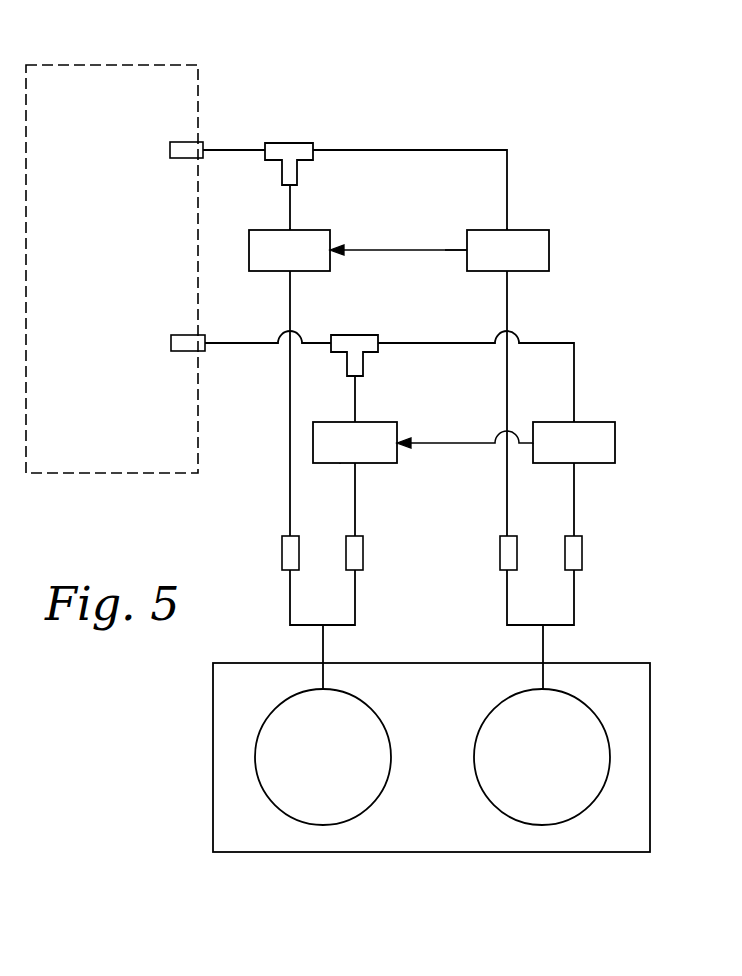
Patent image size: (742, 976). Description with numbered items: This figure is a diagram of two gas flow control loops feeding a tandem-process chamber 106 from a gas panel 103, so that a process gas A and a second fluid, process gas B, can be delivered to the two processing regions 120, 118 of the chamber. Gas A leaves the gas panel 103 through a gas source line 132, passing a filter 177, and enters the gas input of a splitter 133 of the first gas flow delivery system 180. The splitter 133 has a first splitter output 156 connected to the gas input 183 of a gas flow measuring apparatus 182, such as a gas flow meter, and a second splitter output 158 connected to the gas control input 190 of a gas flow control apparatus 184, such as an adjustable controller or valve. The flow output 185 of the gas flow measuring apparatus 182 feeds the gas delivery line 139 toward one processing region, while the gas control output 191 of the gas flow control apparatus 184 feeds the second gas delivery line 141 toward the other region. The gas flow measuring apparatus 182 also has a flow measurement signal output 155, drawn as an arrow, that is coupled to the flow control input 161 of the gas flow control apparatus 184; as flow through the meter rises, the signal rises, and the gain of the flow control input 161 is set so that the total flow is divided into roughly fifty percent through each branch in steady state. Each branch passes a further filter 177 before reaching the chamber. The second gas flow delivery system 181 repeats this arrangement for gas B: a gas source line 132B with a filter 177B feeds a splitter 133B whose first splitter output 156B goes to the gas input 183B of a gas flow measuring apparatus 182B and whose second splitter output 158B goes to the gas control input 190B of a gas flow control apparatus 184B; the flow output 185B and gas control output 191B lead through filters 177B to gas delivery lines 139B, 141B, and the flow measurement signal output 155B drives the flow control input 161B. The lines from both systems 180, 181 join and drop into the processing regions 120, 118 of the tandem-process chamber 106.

The gas panel 103 is at (104, 65).
The filter 177 is at (184, 142).
The valve 177B is at (176, 352).
The gas source line 132 is at (233, 143).
The splitter 133 is at (299, 142).
The second splitter output 158 is at (281, 178).
The first splitter output 156 is at (314, 153).
The gas control input 190 is at (289, 229).
The gas flow control apparatus 184 is at (306, 229).
The flow control input 161 is at (340, 247).
The flow measurement signal output 155 is at (449, 249).
The gas flow measuring apparatus 182 is at (550, 250).
The gas input 183 is at (509, 229).
The gas control output 191 is at (289, 273).
The flow output 185 is at (506, 273).
The gas flow delivery system 180 is at (516, 124).
The gas B supply line 132B is at (246, 346).
The T fitting 133B is at (366, 334).
The line to gas flow meter 156B is at (379, 344).
The T fitting stem line 158B is at (364, 364).
The gas flow controller input 190B is at (357, 421).
The control signal arrow 161B is at (400, 447).
The gas flow controller output line 191B is at (357, 465).
The gas flow controller 184B is at (338, 465).
The gas flow meter 182B is at (616, 443).
The gas flow meter input 183B is at (576, 421).
The gas flow meter output line 185B is at (576, 465).
The signal line 155B is at (533, 447).
The second gas flow delivery system 181 is at (630, 356).
The second gas delivery line 141 is at (289, 614).
The line to chamber C1 141B is at (357, 594).
The gas delivery line 139 is at (506, 614).
The line to chamber C2 139B is at (576, 594).
The tandem-process chamber 106 is at (651, 752).
The processing region 120 is at (344, 713).
The processing region 118 is at (507, 793).